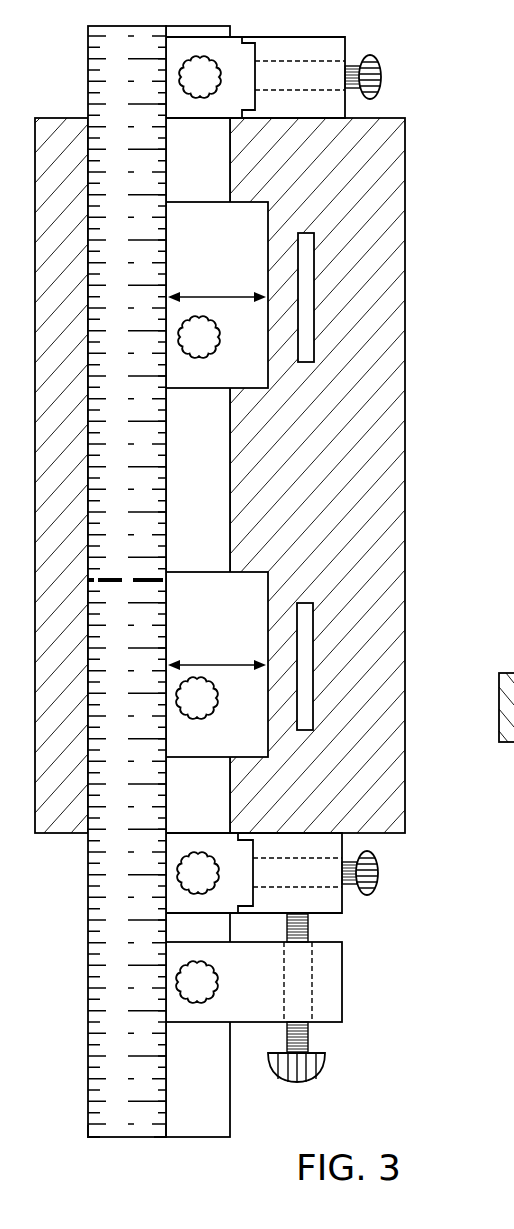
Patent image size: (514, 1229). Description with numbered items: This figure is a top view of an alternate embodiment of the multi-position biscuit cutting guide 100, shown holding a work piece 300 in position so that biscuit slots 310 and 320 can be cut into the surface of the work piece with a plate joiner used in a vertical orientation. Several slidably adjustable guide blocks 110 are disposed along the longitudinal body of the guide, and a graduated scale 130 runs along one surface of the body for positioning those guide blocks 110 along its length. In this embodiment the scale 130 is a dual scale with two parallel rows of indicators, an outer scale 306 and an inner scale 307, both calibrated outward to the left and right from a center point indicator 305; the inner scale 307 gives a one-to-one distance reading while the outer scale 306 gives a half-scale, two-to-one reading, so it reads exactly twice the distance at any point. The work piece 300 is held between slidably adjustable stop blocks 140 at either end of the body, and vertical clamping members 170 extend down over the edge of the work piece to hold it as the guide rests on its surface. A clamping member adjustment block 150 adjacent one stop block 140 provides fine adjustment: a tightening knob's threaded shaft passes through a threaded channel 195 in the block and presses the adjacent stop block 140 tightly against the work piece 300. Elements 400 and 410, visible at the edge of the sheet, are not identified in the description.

The multi-position biscuit cutting guide 100 is at (68, 880).
The slidably adjustable guide block 110 is at (270, 214).
The scale 130 is at (88, 1065).
The slidably adjustable stop block 140 is at (242, 37).
The clamping member adjustment block 150 is at (342, 968).
The vertical clamping member 170 is at (347, 107).
The threaded channel 195 is at (297, 983).
The work piece 300 is at (405, 337).
The center point indicator 305 is at (180, 576).
The outer scale 306 is at (95, 1142).
The inner scale 307 is at (147, 1143).
The biscuit slot 310 is at (315, 283).
The biscuit slot 320 is at (313, 603).
The adjacent figure element 400 is at (503, 585).
The adjacent figure element 410 is at (499, 683).